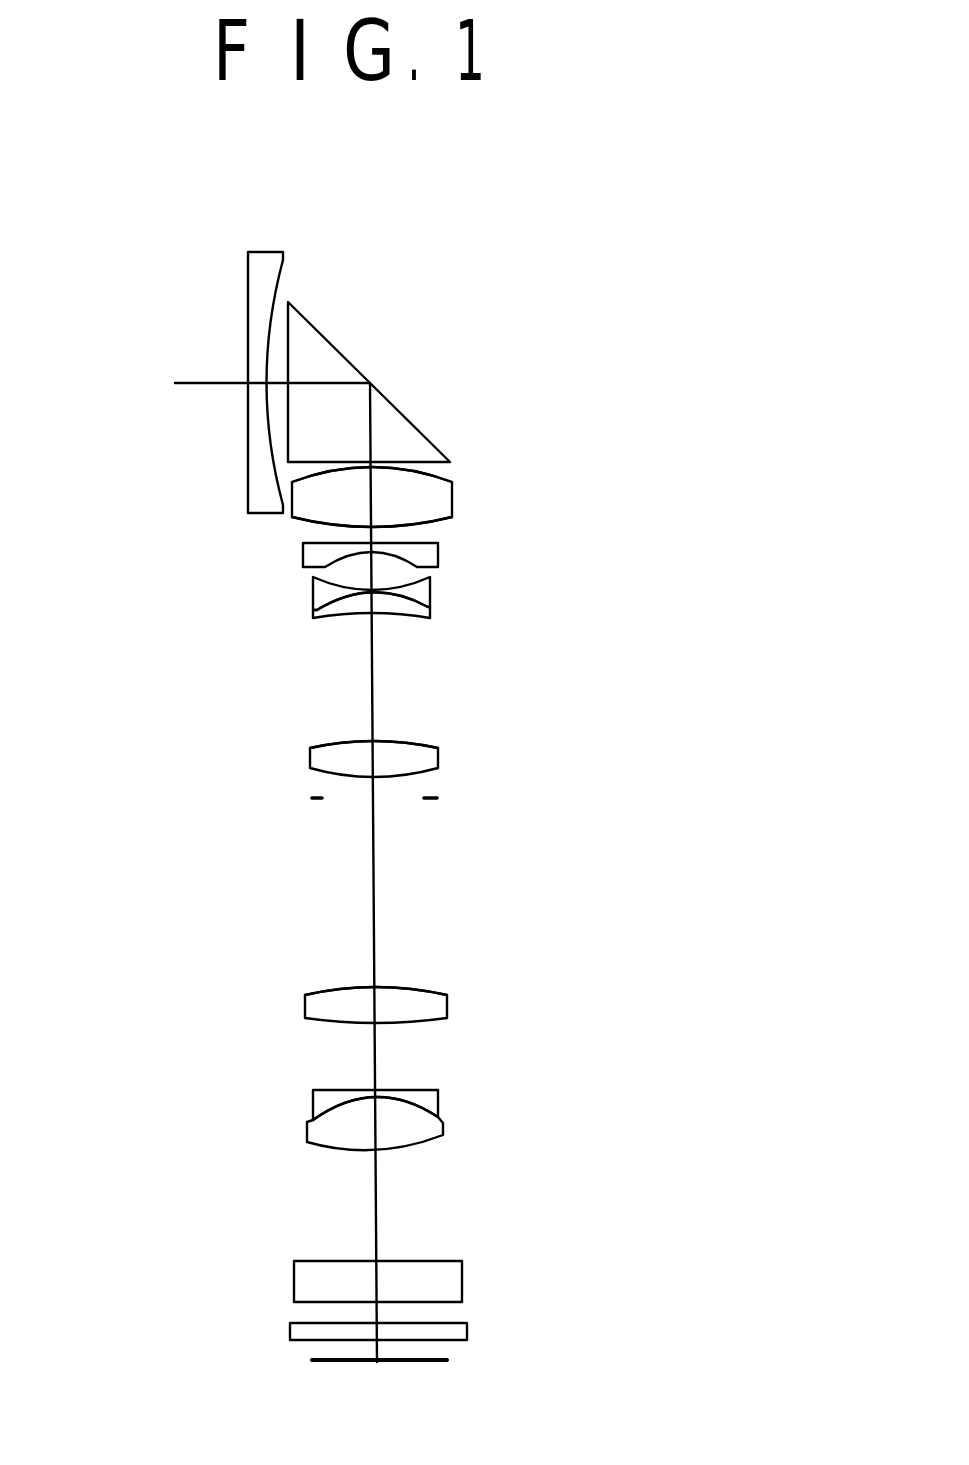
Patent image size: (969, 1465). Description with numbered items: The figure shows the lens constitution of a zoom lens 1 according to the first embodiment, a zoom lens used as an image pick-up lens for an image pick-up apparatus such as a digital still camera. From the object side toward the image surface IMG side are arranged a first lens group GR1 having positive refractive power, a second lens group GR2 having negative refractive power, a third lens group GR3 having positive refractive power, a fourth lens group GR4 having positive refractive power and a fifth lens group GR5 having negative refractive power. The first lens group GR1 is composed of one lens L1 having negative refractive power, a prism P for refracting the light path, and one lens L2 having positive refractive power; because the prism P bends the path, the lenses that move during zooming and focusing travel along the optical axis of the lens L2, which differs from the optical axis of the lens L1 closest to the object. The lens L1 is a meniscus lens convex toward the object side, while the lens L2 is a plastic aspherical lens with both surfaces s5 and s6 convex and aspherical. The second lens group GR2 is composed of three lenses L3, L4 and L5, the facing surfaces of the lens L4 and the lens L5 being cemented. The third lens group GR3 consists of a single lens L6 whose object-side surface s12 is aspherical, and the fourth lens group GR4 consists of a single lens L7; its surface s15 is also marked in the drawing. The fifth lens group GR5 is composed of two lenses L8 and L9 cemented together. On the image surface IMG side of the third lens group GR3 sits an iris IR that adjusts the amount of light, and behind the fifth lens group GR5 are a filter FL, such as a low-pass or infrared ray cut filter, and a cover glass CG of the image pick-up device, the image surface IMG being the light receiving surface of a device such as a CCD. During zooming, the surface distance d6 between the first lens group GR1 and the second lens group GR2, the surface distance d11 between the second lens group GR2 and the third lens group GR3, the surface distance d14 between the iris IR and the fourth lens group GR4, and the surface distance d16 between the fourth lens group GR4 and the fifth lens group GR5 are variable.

The zoom lens 1 is at (156, 343).
The lens L1 is at (283, 259).
The lens L2 is at (453, 502).
The lens L3 is at (438, 550).
The lens L4 is at (438, 590).
The lens L5 is at (438, 620).
The lens L6 is at (438, 757).
The lens L7 is at (447, 1005).
The lens L8 is at (438, 1098).
The lens L9 is at (443, 1132).
The prism P is at (327, 344).
The first lens group GR1 is at (441, 400).
The second lens group GR2 is at (501, 592).
The third lens group GR3 is at (455, 750).
The fourth lens group GR4 is at (471, 985).
The fifth lens group GR5 is at (505, 1129).
The lens surface s5 is at (412, 463).
The lens surface s6 is at (303, 520).
The lens surface s12 is at (335, 741).
The fifteenth surface s15 is at (372, 987).
The surface distance d6 is at (371, 532).
The surface distance d11 is at (372, 655).
The surface distance d14 is at (372, 877).
The surface distance d16 is at (375, 1057).
The iris IR is at (316, 798).
The filter FL is at (462, 1272).
The cover glass CG is at (467, 1331).
The image surface IMG is at (326, 1358).